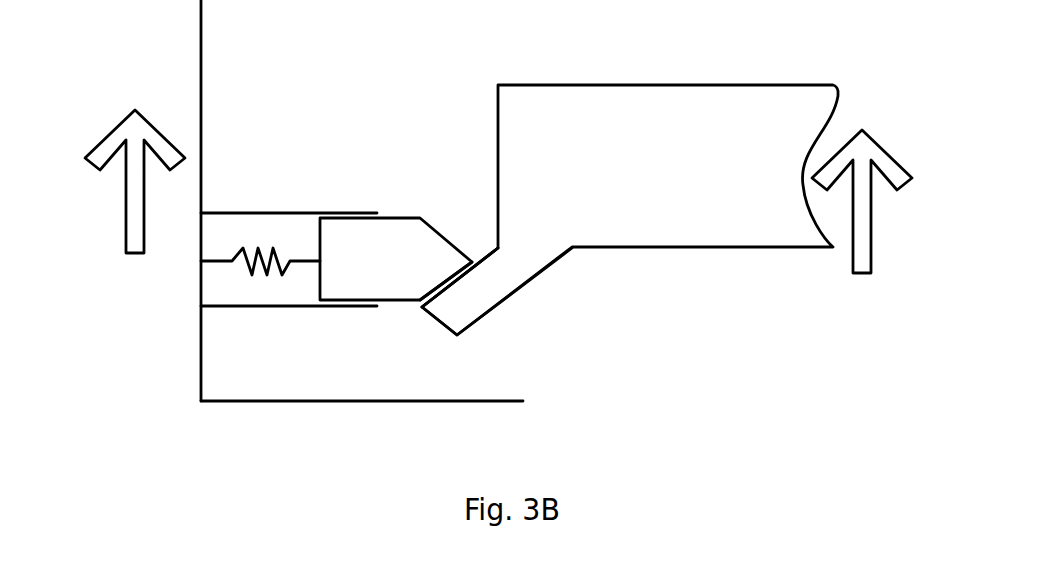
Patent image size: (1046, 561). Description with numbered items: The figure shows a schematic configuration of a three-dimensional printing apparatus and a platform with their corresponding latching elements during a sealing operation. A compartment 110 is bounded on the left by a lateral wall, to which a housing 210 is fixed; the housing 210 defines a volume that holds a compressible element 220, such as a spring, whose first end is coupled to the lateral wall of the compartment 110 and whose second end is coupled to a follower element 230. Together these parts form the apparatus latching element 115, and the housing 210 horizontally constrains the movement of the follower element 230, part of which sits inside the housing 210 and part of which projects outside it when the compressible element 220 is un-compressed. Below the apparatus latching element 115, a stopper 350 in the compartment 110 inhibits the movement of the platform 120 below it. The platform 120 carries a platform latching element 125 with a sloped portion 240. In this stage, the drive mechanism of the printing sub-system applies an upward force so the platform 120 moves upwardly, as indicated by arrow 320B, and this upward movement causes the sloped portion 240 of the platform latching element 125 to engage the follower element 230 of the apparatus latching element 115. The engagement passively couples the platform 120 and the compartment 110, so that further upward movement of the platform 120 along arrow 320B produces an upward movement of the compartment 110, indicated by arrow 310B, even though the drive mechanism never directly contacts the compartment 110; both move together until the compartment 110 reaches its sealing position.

The compartment 110 is at (200, 90).
The apparatus latching element 115 is at (346, 111).
The platform 120 is at (602, 85).
The platform latching element 125 is at (508, 310).
The housing 210 is at (230, 213).
The compressible element 220 is at (262, 272).
The follower element 230 is at (393, 216).
The sloped portion 240 is at (478, 260).
The arrow indicating upward movement of the compartment 310B is at (126, 218).
The arrow indicating upward movement of the platform 320B is at (871, 238).
The stopper 350 is at (233, 401).